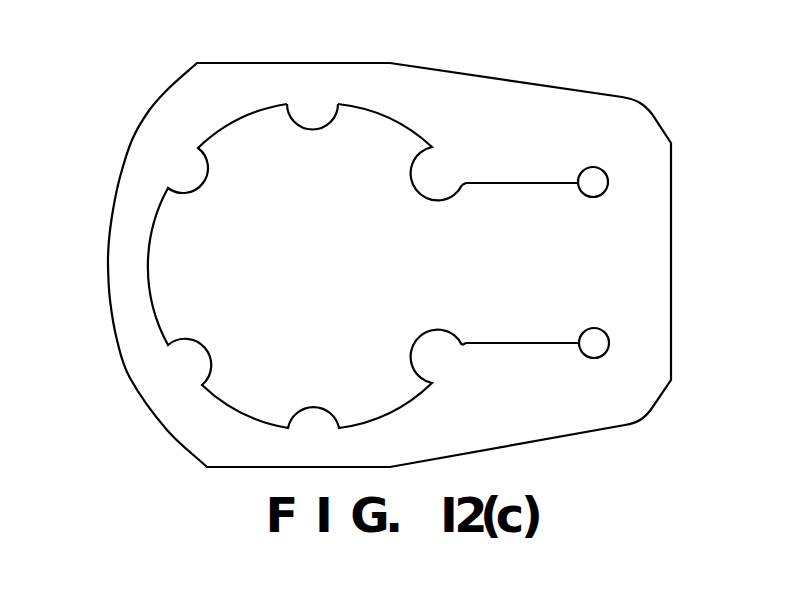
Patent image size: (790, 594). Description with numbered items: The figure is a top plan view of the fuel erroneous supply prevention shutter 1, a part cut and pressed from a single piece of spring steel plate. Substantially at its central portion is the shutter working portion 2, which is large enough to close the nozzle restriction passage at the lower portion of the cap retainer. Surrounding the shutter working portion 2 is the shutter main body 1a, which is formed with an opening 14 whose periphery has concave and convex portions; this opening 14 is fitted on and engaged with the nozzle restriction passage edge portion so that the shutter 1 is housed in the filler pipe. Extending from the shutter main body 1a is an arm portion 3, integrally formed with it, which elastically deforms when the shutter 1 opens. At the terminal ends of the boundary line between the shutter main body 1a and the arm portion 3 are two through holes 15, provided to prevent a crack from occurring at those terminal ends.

The fuel erroneous supply prevention shutter 1 is at (392, 249).
The shutter main body 1a is at (535, 104).
The shutter working portion 2 is at (213, 272).
The arm portion 3 is at (533, 262).
The opening 14 is at (336, 110).
The through holes 15 is at (600, 180).